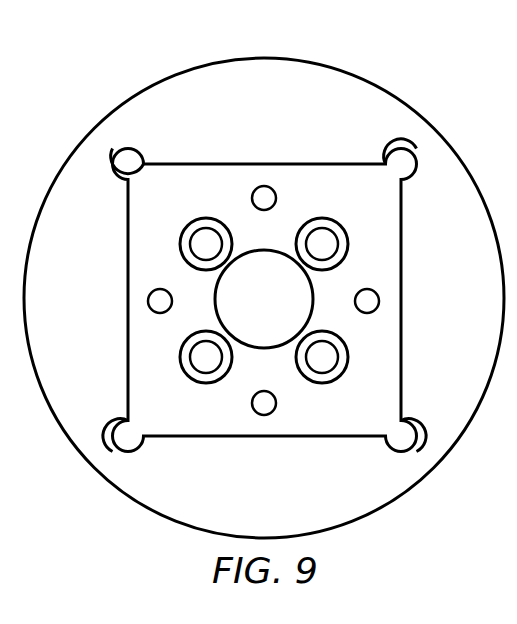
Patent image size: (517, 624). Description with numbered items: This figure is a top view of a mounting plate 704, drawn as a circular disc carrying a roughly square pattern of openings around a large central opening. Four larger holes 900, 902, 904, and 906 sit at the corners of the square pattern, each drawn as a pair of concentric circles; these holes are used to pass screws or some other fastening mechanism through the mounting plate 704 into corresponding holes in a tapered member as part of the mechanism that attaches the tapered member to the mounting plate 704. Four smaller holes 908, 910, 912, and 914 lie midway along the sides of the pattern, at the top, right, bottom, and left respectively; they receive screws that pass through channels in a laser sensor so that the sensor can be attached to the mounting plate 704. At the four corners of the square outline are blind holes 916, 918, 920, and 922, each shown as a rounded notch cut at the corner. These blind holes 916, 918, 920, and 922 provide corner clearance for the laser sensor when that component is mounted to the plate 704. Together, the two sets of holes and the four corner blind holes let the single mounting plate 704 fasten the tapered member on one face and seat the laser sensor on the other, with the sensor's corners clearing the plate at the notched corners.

The mounting plate 704 is at (310, 63).
The hole 900 is at (322, 244).
The hole 902 is at (322, 357).
The hole 904 is at (206, 357).
The hole 906 is at (206, 244).
The hole 908 is at (264, 198).
The hole 910 is at (367, 301).
The hole 912 is at (264, 403).
The hole 914 is at (160, 301).
The blind hole 916 is at (126, 164).
The blind hole 918 is at (402, 164).
The blind hole 920 is at (408, 438).
The blind hole 922 is at (120, 438).